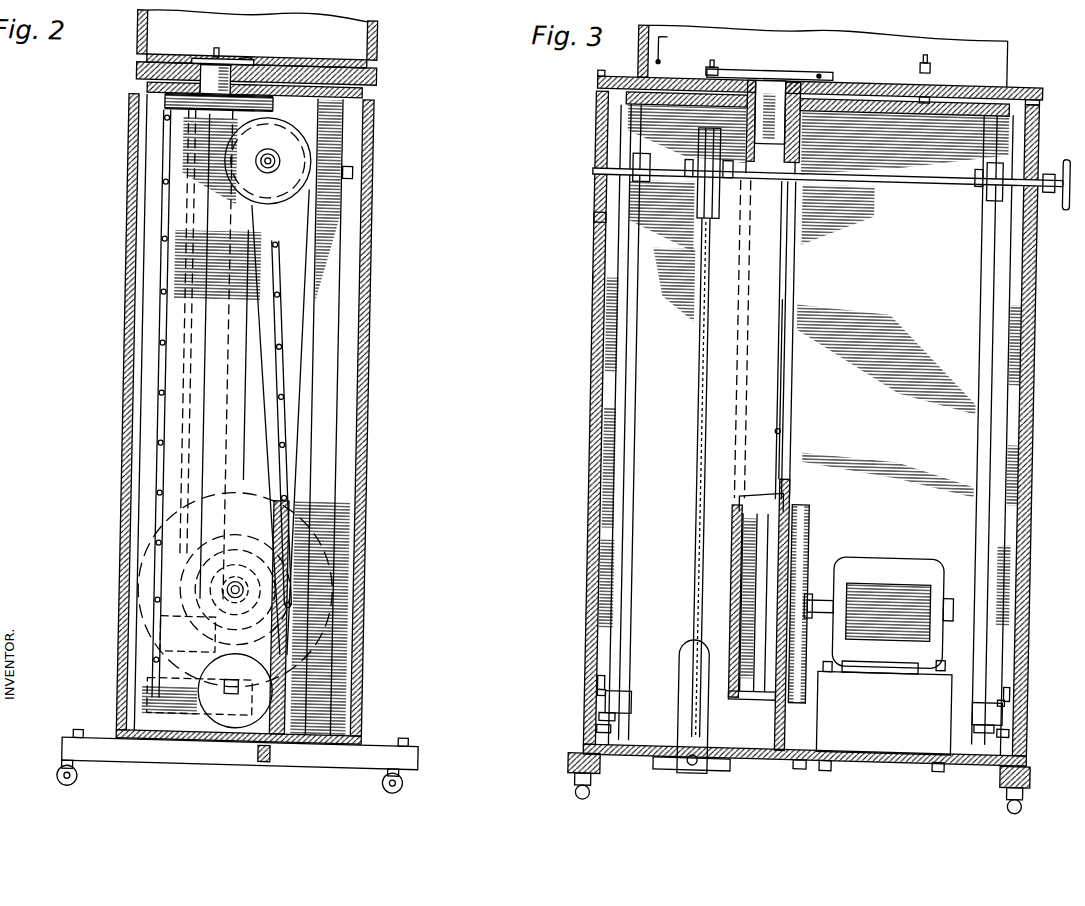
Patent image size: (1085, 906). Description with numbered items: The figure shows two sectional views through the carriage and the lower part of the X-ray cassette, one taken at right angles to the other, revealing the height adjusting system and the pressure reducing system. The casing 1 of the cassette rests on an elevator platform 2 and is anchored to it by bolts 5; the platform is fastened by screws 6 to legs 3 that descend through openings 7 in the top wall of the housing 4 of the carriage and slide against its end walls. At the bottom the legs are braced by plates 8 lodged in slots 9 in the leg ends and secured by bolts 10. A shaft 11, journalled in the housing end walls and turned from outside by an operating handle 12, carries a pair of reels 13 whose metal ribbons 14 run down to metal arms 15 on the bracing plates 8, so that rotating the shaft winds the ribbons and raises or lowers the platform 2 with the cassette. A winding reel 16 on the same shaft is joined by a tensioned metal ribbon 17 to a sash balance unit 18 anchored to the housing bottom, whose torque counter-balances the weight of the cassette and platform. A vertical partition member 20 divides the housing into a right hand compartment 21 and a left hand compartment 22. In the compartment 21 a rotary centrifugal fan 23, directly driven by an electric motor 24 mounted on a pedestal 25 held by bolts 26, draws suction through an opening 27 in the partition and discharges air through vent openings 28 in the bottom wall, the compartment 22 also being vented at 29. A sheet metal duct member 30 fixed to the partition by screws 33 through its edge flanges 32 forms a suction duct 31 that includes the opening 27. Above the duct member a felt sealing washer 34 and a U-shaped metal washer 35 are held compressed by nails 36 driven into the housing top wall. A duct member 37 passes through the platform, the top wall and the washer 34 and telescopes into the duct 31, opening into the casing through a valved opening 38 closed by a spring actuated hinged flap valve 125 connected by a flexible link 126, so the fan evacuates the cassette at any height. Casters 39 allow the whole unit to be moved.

In FIG. 2, the casing 1 is at (130, 27).
In FIG. 3, the casing 1 is at (632, 43).
In FIG. 2, the elevator platform 2 is at (130, 69).
In FIG. 3, the elevator platform 2 is at (591, 88).
In FIG. 2, the legs 3 is at (160, 83).
In FIG. 3, the legs 3 is at (590, 330).
In FIG. 2, the housing 4 is at (124, 264).
In FIG. 3, the housing 4 is at (590, 280).
In FIG. 3, the bolts 5 is at (700, 66).
In FIG. 3, the screws 6 is at (591, 78).
In FIG. 3, the openings 7 is at (620, 107).
In FIG. 3, the plates 8 is at (611, 705).
In FIG. 3, the slots 9 is at (602, 683).
In FIG. 3, the bolts 10 is at (602, 696).
In FIG. 2, the shaft 11 is at (276, 158).
In FIG. 3, the shaft 11 is at (892, 181).
In FIG. 3, the operating handle 12 is at (1060, 155).
In FIG. 2, the reels 13 is at (348, 170).
In FIG. 3, the reels 13 is at (628, 165).
In FIG. 2, the metal ribbons 14 is at (288, 457).
In FIG. 3, the metal ribbons 14 is at (636, 443).
In FIG. 2, the metal arms 15 is at (197, 725).
In FIG. 3, the metal arms 15 is at (618, 716).
In FIG. 2, the winding reel 16 is at (300, 133).
In FIG. 3, the winding reel 16 is at (693, 210).
In FIG. 2, the tensioned metal ribbon 17 is at (305, 223).
In FIG. 3, the tensioned metal ribbon 17 is at (697, 395).
In FIG. 2, the sash balance unit 18 is at (228, 728).
In FIG. 3, the sash balance unit 18 is at (684, 664).
In FIG. 2, the partition member 20 is at (141, 204).
In FIG. 3, the partition member 20 is at (792, 341).
In FIG. 3, the right hand compartment 21 is at (886, 391).
In FIG. 3, the left hand compartment 22 is at (667, 340).
In FIG. 2, the rotary centrifugal fan 23 is at (142, 520).
In FIG. 3, the rotary centrifugal fan 23 is at (812, 516).
In FIG. 2, the electric motor 24 is at (142, 628).
In FIG. 3, the electric motor 24 is at (880, 612).
In FIG. 3, the pedestal 25 is at (884, 707).
In FIG. 3, the bolts 26 is at (946, 660).
In FIG. 3, the opening 27 is at (814, 578).
In FIG. 3, the vent openings 28 is at (805, 770).
In FIG. 3, the vent 29 is at (590, 222).
In FIG. 2, the duct member 30 is at (160, 322).
In FIG. 3, the duct member 30 is at (778, 262).
In FIG. 3, the suction duct 31 is at (740, 694).
In FIG. 2, the edge flanges 32 is at (172, 122).
In FIG. 3, the edge flanges 32 is at (782, 380).
In FIG. 2, the screws 33 is at (158, 448).
In FIG. 3, the screws 33 is at (781, 432).
In FIG. 2, the sealing washer 34 is at (160, 104).
In FIG. 3, the sealing washer 34 is at (800, 130).
In FIG. 2, the washer 35 is at (160, 97).
In FIG. 3, the washer 35 is at (770, 72).
In FIG. 2, the nails 36 is at (160, 110).
In FIG. 2, the duct member 37 is at (220, 66).
In FIG. 3, the duct member 37 is at (785, 500).
In FIG. 2, the valved opening 38 is at (181, 59).
In FIG. 3, the valved opening 38 is at (790, 82).
In FIG. 2, the casters 39 is at (392, 782).
In FIG. 3, the casters 39 is at (582, 789).
In FIG. 2, the hinged flap valve 125 is at (247, 60).
In FIG. 3, the hinged flap valve 125 is at (812, 75).
In FIG. 3, the flexible link 126 is at (676, 47).